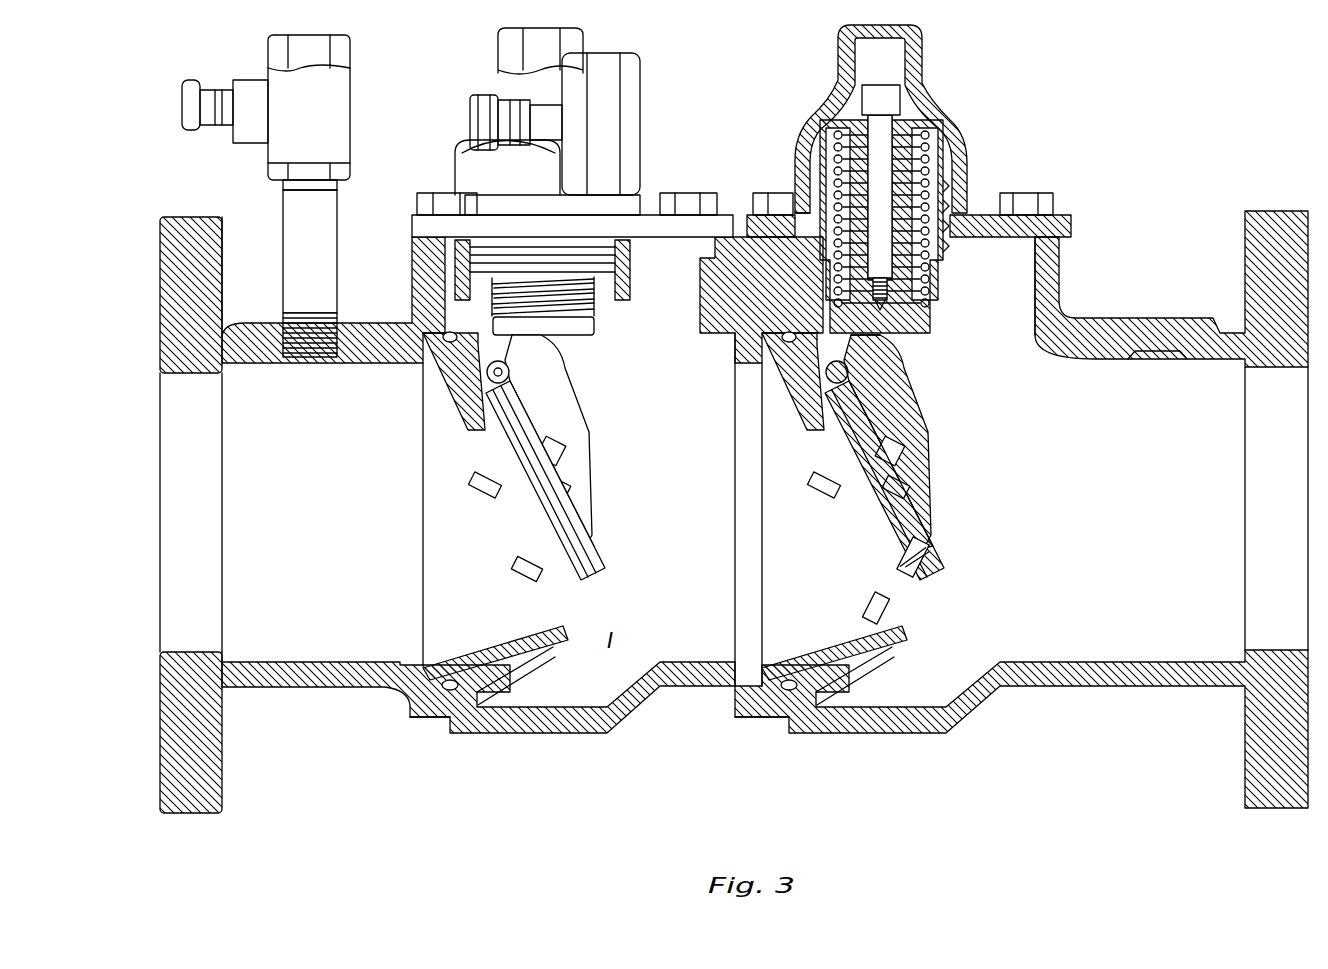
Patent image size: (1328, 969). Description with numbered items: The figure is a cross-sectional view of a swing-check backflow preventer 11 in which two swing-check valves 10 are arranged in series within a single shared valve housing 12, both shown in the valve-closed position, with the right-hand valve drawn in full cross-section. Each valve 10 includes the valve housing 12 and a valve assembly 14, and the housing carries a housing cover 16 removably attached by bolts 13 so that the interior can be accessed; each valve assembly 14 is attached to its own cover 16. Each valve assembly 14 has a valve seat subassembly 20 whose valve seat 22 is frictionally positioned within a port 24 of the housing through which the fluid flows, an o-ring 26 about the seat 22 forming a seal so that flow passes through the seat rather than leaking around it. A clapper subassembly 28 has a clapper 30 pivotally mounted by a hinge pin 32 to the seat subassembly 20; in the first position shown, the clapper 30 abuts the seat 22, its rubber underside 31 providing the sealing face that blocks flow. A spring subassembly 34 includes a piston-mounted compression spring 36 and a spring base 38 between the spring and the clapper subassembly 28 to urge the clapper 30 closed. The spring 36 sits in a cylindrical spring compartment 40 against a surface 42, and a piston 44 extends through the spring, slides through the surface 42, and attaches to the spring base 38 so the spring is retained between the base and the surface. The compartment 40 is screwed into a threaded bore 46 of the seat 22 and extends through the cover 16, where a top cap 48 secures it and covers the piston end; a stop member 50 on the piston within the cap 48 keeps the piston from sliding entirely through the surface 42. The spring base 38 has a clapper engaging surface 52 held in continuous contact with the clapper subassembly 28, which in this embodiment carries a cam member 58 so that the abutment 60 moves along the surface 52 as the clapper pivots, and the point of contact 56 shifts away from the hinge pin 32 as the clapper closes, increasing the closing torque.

The swing-check valve 10 is at (438, 162).
The swing-check backflow preventer 11 is at (328, 753).
The valve housing 12 is at (1090, 322).
The bolts 13 is at (432, 205).
The valve assembly 14 is at (638, 340).
The housing cover 16 is at (432, 230).
The valve seat subassembly 20 is at (536, 681).
The valve seat 22 is at (465, 660).
The port 24 is at (402, 700).
The o-ring 26 is at (425, 375).
The clapper subassembly 28 is at (751, 486).
The clapper 30 is at (580, 512).
The rubber underside 31 is at (827, 443).
The hinge pin 32 is at (480, 427).
The spring subassembly 34 is at (626, 320).
The compression spring 36 is at (937, 177).
The spring base 38 is at (600, 332).
The spring compartment 40 is at (916, 106).
The surface 42 is at (928, 124).
The piston 44 is at (797, 178).
The threaded bore 46 is at (962, 259).
The top cap 48 is at (500, 90).
The stop member 50 is at (866, 100).
The clapper engaging surface 52 is at (918, 343).
The point of contact 56 is at (560, 302).
The cam member 58 is at (567, 363).
The abutment 60 is at (543, 340).